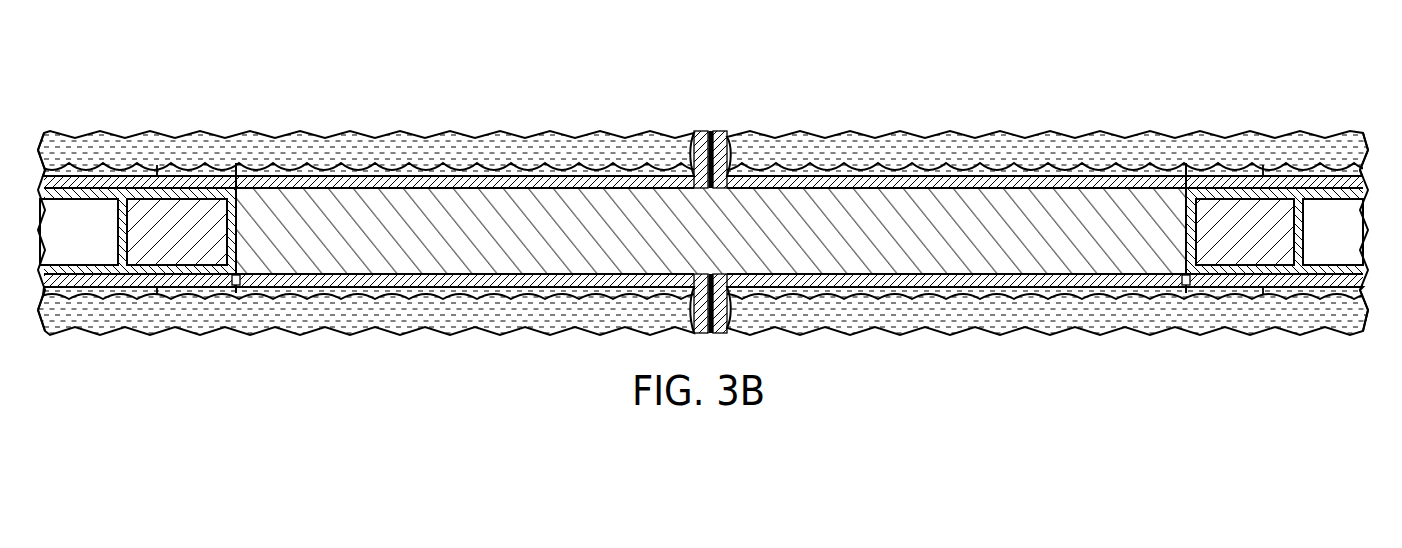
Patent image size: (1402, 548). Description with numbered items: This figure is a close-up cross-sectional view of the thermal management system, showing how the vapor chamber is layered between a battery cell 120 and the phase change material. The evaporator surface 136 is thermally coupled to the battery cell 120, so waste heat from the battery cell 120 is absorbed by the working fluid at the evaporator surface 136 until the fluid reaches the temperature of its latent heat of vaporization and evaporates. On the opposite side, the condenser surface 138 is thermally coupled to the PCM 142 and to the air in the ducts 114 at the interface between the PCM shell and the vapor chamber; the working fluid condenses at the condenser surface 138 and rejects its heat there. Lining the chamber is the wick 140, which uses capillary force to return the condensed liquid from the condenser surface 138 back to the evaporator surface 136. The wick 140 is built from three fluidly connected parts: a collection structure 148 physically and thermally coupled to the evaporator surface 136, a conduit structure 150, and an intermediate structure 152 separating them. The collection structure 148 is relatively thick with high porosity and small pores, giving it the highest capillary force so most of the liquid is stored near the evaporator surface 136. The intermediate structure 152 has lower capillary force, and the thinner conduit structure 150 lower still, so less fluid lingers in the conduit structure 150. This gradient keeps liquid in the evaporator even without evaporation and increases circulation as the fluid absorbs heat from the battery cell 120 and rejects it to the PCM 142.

The ducts 114 is at (93, 246).
The battery cell 120 is at (730, 246).
The evaporator surface 136 is at (498, 185).
The condenser surface 138 is at (67, 182).
The wick 140 is at (570, 127).
The PCM 142 is at (195, 246).
The collection structure 148 is at (365, 170).
The conduit structure 150 is at (127, 167).
The intermediate structure 152 is at (197, 167).